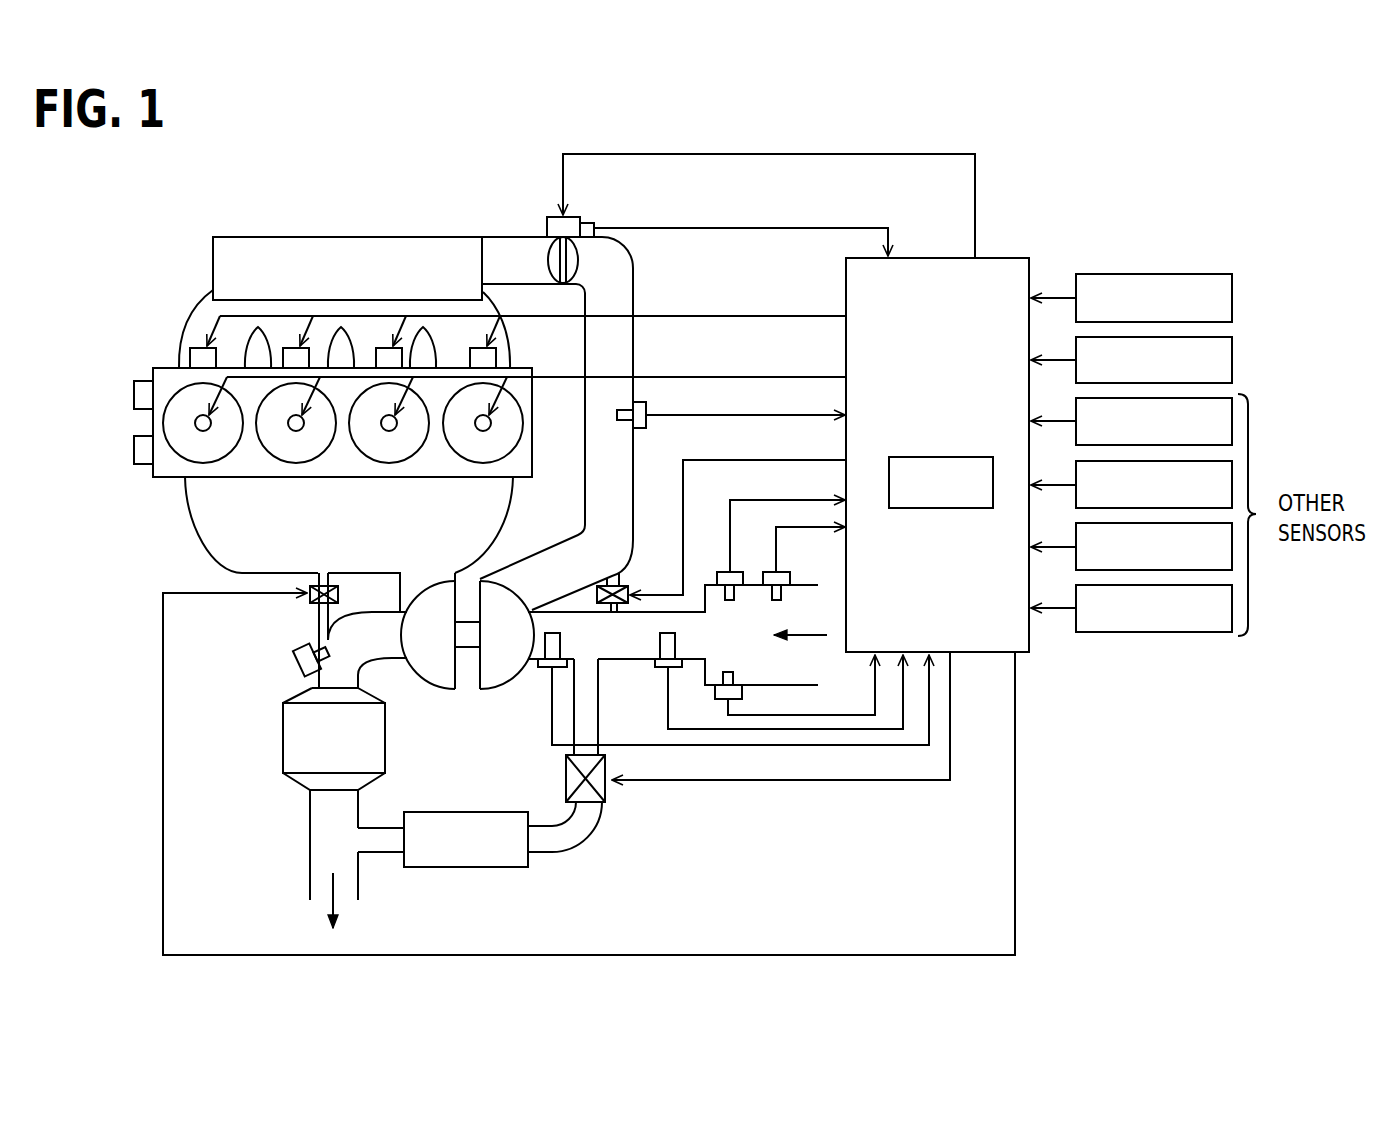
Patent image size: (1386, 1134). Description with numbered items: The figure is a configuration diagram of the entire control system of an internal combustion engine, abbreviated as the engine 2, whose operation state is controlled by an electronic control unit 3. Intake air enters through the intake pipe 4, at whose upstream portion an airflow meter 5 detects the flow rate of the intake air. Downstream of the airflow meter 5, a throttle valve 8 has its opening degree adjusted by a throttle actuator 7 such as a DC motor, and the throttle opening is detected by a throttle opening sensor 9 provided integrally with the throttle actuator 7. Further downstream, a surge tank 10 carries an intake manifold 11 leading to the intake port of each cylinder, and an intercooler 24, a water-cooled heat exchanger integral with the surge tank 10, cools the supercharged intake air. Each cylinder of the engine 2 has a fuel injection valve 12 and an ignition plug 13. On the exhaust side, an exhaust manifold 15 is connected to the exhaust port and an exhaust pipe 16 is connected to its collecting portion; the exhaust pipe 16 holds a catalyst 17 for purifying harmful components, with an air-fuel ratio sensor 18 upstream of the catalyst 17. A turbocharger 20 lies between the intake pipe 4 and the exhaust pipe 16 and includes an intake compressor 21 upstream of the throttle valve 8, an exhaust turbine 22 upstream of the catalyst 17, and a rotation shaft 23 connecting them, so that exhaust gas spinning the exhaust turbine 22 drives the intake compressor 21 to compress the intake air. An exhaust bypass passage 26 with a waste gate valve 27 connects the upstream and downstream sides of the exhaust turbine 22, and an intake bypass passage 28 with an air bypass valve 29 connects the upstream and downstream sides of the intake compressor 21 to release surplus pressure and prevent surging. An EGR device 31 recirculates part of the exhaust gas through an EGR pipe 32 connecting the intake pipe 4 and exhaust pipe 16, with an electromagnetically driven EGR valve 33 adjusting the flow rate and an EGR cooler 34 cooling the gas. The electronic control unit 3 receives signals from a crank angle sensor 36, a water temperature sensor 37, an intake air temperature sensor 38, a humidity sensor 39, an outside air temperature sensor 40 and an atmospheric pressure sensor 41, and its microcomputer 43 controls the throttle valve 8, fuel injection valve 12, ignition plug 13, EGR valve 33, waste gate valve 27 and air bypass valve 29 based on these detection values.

The engine 2 is at (134, 308).
The electronic control unit 3 is at (1000, 258).
The intake pipe 4 is at (538, 552).
The airflow meter 5 is at (658, 661).
The throttle actuator 7 is at (547, 230).
The throttle valve 8 is at (572, 263).
The throttle opening sensor 9 is at (590, 222).
The surge tank 10 is at (330, 237).
The intake manifold 11 is at (192, 317).
The fuel injection valve 12 is at (497, 357).
The ignition plug 13 is at (491, 427).
The exhaust manifold 15 is at (190, 531).
The exhaust pipe 16 is at (307, 680).
The catalyst 17 is at (283, 735).
The air-fuel ratio sensor 18 is at (297, 658).
The turbocharger 20 is at (437, 744).
The intake compressor 21 is at (495, 690).
The exhaust turbine 22 is at (440, 690).
The rotation shaft 23 is at (469, 648).
The intercooler 24 is at (436, 237).
The exhaust bypass passage 26 is at (330, 576).
The waste gate valve 27 is at (312, 604).
The intake bypass passage 28 is at (614, 580).
The air bypass valve 29 is at (629, 587).
The EGR device 31 is at (611, 828).
The EGR pipe 32 is at (572, 843).
The EGR valve 33 is at (600, 787).
The EGR cooler 34 is at (488, 812).
The crank angle sensor 36 is at (1230, 298).
The water temperature sensor 37 is at (1230, 360).
The intake air temperature sensor 38 is at (648, 405).
The humidity sensor 39 is at (738, 571).
The outside air temperature sensor 40 is at (790, 573).
The atmospheric pressure sensor 41 is at (742, 695).
The microcomputer 43 is at (931, 460).